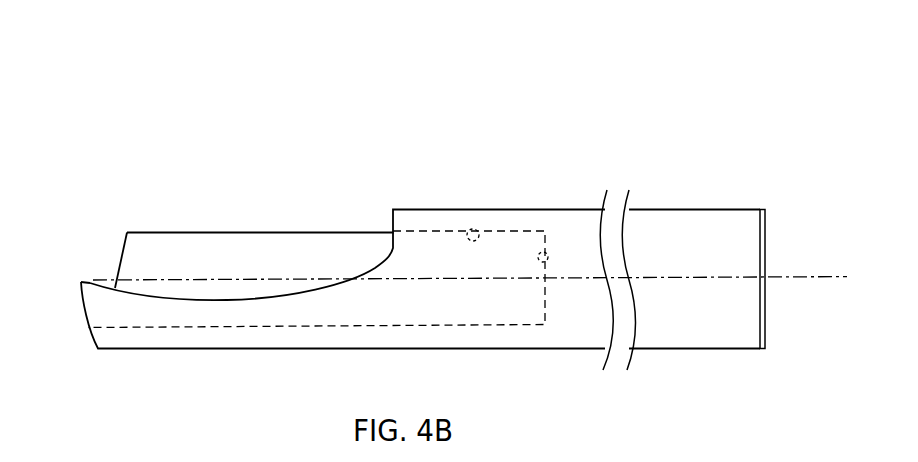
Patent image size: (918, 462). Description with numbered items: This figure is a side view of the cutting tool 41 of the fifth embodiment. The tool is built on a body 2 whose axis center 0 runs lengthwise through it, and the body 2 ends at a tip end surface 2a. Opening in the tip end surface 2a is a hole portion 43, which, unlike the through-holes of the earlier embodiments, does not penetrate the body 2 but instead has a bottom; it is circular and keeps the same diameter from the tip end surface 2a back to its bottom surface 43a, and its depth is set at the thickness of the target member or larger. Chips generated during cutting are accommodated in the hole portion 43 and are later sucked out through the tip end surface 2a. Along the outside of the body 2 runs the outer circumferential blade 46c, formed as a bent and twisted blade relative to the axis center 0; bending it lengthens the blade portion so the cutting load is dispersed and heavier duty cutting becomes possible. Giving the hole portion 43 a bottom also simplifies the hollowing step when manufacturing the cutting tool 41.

The body 2 is at (542, 193).
The tip end surface 2a is at (120, 257).
The outer circumferential blade 46c is at (91, 280).
The cutting tool 41 is at (527, 125).
The hole portion 43 is at (480, 229).
The bottom surface 43a is at (549, 257).
The axis center 0 is at (803, 275).